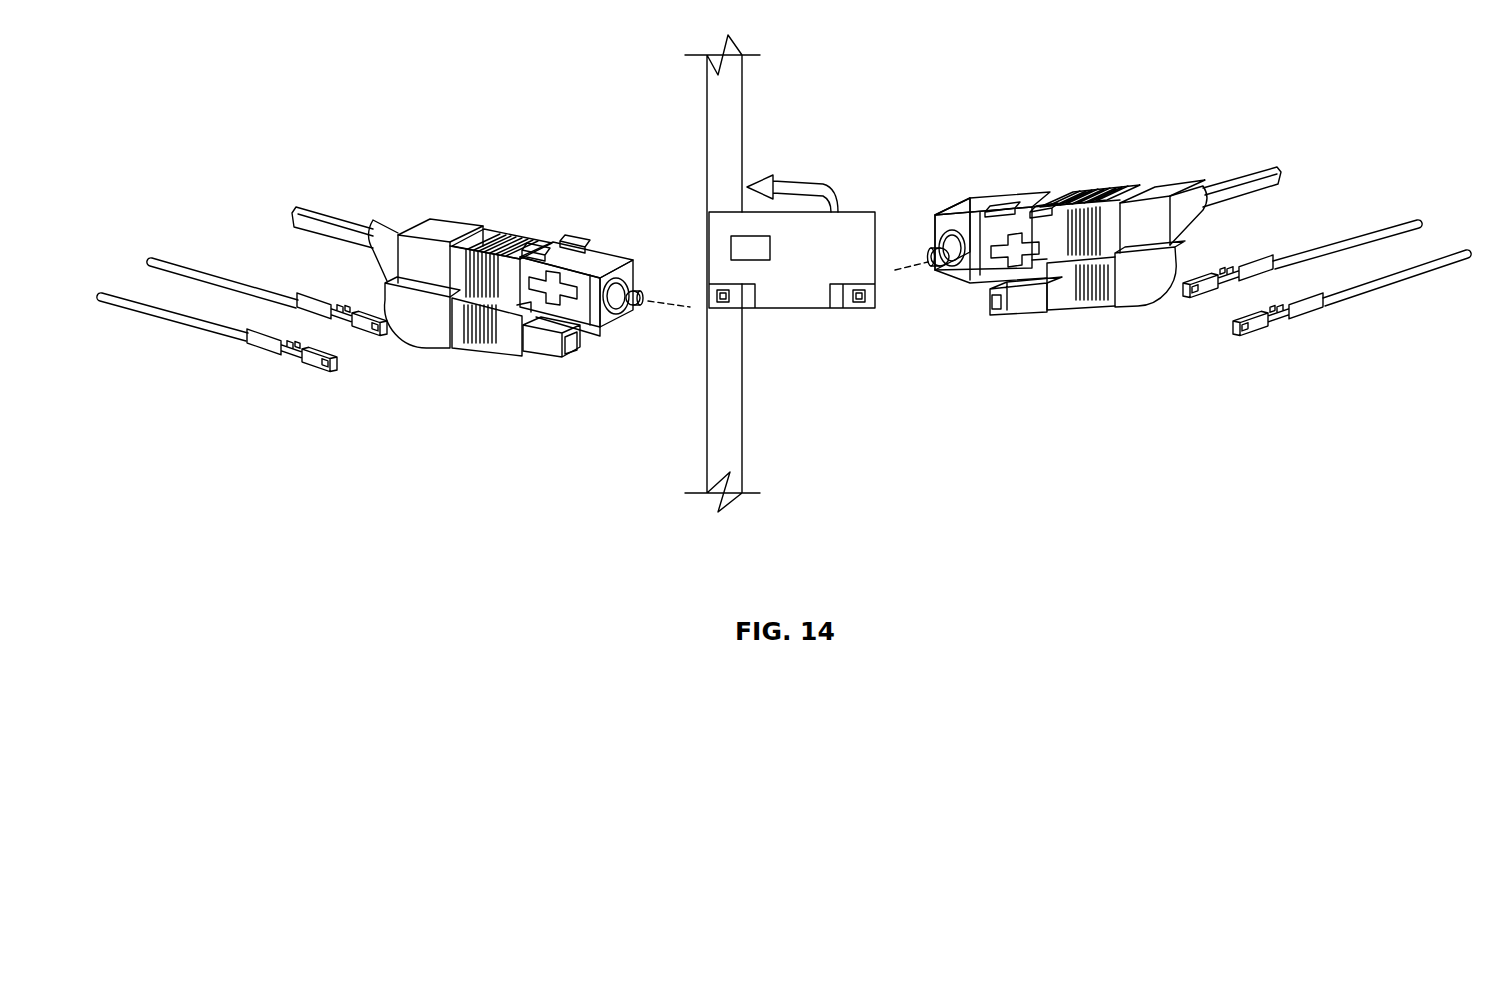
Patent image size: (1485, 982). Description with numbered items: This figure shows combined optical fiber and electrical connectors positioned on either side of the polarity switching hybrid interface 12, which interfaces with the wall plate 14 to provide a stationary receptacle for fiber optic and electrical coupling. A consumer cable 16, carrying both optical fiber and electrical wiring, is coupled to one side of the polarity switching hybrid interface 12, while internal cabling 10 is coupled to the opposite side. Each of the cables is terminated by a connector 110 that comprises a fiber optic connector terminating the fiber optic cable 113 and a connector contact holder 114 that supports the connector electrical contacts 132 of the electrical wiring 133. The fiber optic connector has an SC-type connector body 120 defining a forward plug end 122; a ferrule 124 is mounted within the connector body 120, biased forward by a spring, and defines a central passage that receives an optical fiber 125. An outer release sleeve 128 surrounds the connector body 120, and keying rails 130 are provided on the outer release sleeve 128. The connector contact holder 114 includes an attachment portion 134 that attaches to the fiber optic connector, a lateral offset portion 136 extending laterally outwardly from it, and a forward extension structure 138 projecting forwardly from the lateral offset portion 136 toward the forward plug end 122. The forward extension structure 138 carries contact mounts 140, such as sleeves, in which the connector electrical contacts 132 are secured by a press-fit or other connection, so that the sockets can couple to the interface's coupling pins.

The internal cabling 10 is at (1316, 82).
The polarity switching hybrid interface 12 is at (810, 181).
The wall plate 14 is at (744, 95).
The consumer cable 16 is at (256, 120).
The connector 110 is at (512, 224).
The fiber optic cable 113 is at (325, 208).
The connector contact holder 114 is at (423, 357).
The connector body 120 is at (580, 296).
The forward plug end 122 is at (935, 224).
The ferrule 124 is at (600, 300).
The optical fiber 125 is at (648, 308).
The outer release sleeve 128 is at (553, 242).
The keying rails 130 is at (578, 250).
The connector electrical contacts 132 is at (270, 352).
The electrical wiring 133 is at (181, 263).
The attachment portion 134 is at (440, 228).
The lateral offset portion 136 is at (383, 290).
The forward extension structure 138 is at (510, 337).
The contact mounts 140 is at (547, 342).